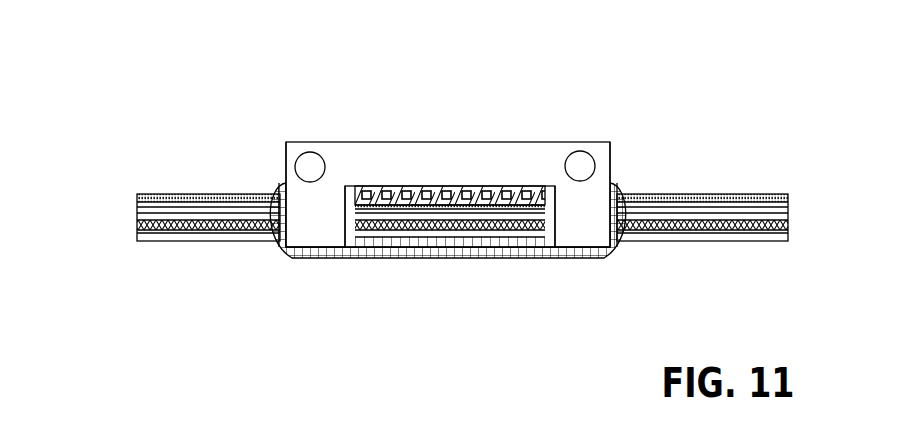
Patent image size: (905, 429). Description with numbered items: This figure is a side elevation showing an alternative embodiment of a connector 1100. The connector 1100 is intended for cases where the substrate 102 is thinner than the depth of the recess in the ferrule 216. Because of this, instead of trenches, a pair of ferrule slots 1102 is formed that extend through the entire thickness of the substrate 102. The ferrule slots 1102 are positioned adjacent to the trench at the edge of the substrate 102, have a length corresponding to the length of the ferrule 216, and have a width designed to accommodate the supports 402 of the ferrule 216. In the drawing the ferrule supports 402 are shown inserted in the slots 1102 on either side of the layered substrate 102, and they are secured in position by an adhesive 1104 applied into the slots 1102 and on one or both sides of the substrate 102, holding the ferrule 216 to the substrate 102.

The connector 1100 is at (524, 71).
The ferrule 216 is at (415, 150).
The ferrule slots 1102 is at (280, 252).
The supports 402 is at (312, 228).
The adhesive 1104 is at (478, 256).
The substrate 102 is at (798, 192).